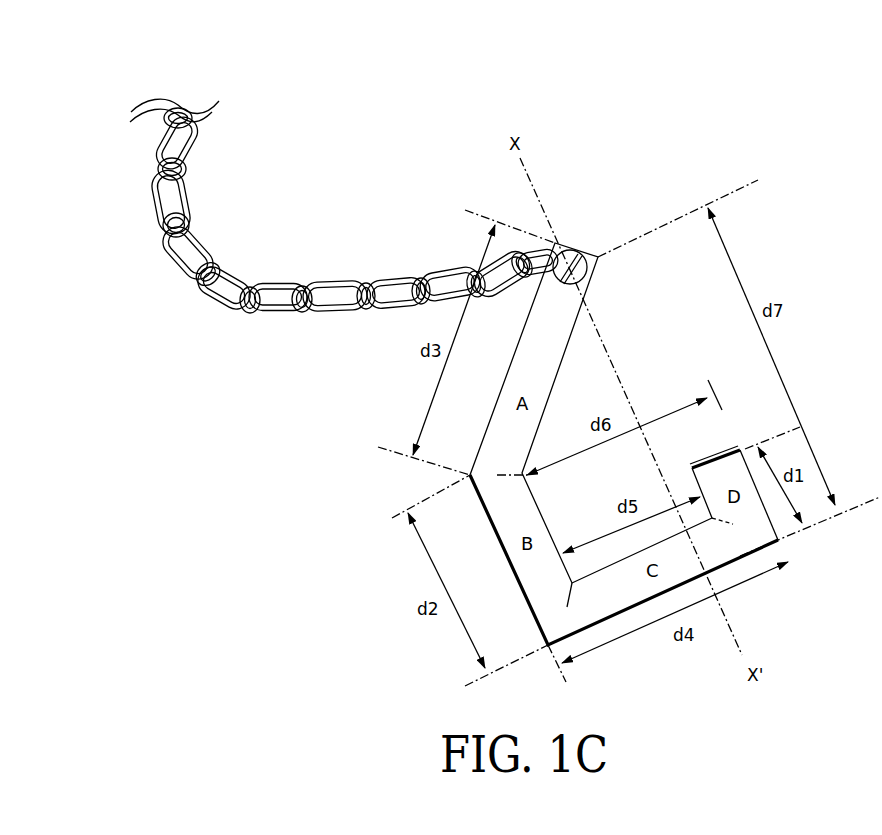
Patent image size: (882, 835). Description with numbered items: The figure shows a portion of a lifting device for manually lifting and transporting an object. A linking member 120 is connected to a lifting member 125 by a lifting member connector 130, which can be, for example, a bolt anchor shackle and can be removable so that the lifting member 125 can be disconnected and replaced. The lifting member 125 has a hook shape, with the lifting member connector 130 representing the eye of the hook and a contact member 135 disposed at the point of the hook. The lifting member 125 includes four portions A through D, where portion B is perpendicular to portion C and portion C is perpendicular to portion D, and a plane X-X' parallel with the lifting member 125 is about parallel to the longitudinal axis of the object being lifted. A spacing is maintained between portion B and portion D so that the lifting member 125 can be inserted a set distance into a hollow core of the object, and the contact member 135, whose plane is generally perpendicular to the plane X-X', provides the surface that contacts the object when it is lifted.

The linking member 120 is at (208, 300).
The lifting member 125 is at (507, 558).
The lifting member connector 130 is at (590, 270).
The contact member 135 is at (713, 463).